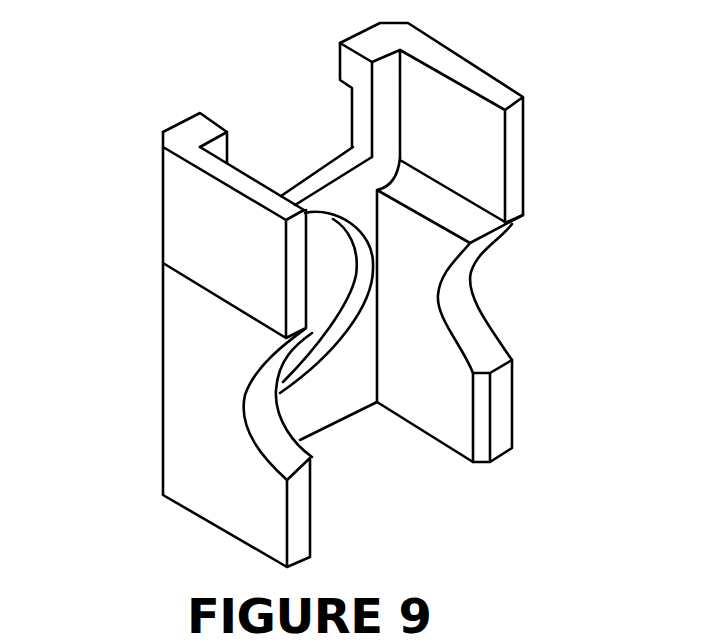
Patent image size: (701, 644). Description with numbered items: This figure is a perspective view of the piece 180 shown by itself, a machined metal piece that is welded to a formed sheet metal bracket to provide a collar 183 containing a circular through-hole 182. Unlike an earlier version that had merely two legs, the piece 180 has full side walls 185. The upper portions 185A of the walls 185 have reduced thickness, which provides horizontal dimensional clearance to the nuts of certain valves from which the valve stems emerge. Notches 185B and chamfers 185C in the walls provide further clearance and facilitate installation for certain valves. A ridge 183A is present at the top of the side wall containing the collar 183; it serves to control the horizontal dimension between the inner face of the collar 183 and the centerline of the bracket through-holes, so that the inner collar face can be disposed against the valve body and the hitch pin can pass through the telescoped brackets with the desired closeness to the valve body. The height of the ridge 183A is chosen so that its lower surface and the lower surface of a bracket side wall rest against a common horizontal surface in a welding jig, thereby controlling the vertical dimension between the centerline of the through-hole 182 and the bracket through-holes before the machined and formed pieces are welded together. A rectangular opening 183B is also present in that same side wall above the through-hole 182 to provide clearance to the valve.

The piece 180 is at (334, 293).
The circular through-hole 182 is at (353, 245).
The collar 183 is at (335, 405).
The ridge 183A is at (347, 62).
The rectangular opening 183B is at (343, 126).
The side walls 185 is at (477, 310).
The upper portions of side walls 185A is at (532, 94).
The notches 185B is at (477, 349).
The chamfers 185C is at (479, 425).